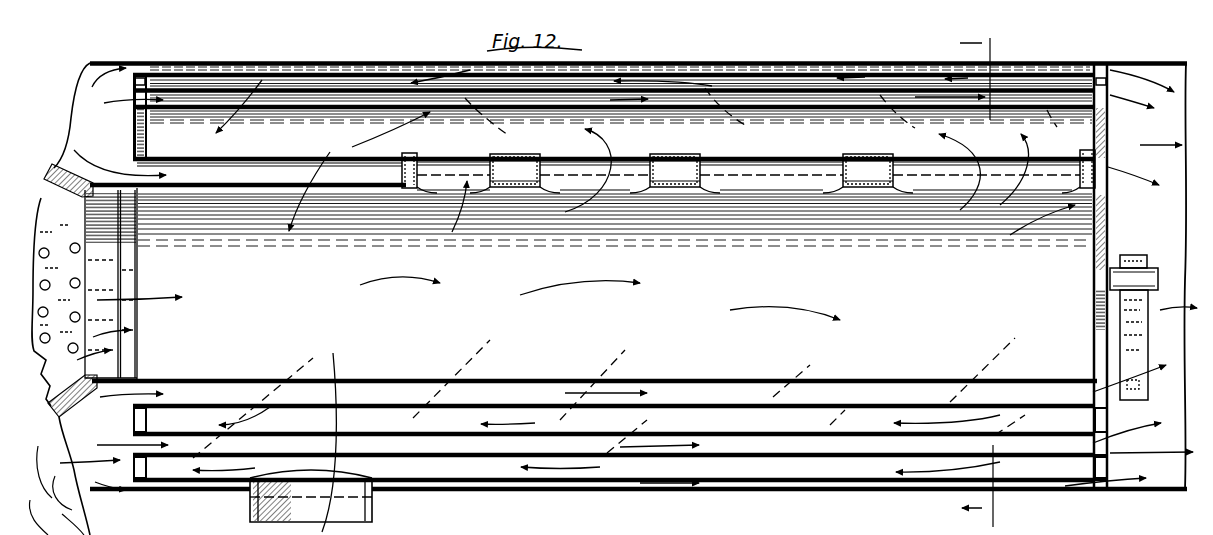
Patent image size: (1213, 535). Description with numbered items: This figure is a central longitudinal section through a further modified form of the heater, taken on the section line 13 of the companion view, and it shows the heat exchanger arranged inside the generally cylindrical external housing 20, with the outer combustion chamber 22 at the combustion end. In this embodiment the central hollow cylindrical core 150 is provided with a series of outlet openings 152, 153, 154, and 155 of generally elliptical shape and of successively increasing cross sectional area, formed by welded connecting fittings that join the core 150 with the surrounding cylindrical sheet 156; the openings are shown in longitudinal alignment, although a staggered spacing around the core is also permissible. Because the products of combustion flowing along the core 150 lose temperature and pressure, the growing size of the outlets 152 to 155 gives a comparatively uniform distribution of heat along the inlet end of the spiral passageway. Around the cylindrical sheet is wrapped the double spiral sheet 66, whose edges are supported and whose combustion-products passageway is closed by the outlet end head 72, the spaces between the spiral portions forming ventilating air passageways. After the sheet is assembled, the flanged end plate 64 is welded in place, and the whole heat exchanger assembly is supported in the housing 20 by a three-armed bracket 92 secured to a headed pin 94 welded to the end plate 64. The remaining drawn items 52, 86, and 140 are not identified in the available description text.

The section line 13— 13 is at (990, 277).
The external housing 20 is at (778, 62).
The outer combustion chamber 22 is at (70, 402).
The bit body 52 is at (87, 282).
The flanged end plate 64 is at (1093, 212).
The double spiral sheet 66 is at (778, 486).
The outlet end head 72 is at (1106, 469).
The outer tube 86 is at (887, 488).
The three-armed bracket 92 is at (1140, 343).
The headed pin 94 is at (1158, 276).
The discharge spout 140 is at (415, 444).
The central hollow cylindrical core 150 is at (950, 380).
The outlet opening 152 is at (434, 148).
The outlet opening 153 is at (621, 185).
The outlet opening 154 is at (772, 184).
The outlet opening 155 is at (977, 184).
The cylindrical sheet 156 is at (302, 151).